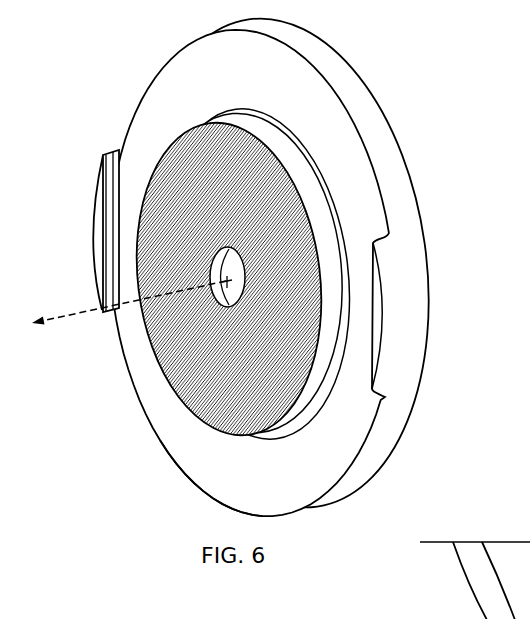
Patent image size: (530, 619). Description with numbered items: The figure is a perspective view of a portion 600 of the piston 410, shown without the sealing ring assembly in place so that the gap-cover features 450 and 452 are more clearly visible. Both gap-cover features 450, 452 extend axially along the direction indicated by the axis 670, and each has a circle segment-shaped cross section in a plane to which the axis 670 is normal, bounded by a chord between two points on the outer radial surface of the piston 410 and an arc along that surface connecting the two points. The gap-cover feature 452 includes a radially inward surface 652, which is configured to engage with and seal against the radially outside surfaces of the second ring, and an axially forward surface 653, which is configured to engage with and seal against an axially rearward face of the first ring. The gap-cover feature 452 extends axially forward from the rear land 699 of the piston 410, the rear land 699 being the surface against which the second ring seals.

The portion 600 is at (245, 64).
The piston 410 is at (233, 182).
The radially inward surface 652 is at (115, 177).
The axially forward surface 653 is at (92, 248).
The gap-cover feature 452 is at (67, 172).
The gap-cover feature 450 is at (393, 296).
The axis 670 is at (118, 315).
The rear land 699 is at (205, 455).